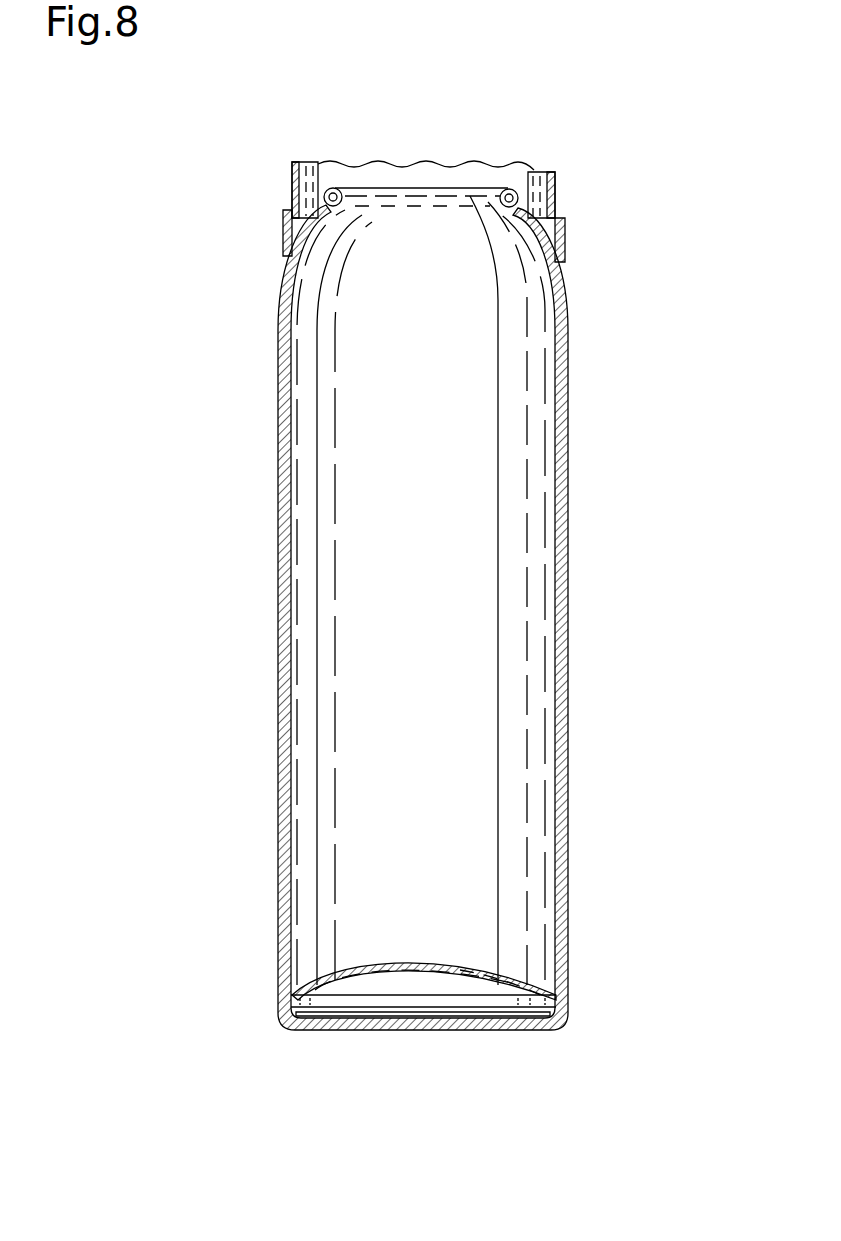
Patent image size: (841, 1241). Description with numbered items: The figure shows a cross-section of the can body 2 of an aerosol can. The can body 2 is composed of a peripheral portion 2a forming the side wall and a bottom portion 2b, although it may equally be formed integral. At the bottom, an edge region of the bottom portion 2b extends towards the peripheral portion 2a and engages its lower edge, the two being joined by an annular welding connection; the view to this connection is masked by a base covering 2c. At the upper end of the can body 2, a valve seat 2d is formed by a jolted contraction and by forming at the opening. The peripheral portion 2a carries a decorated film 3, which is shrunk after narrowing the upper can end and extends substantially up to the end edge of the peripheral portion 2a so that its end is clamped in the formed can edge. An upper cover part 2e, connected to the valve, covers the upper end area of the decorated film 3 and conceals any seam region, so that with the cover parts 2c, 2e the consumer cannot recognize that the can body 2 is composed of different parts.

The can body 2 is at (236, 280).
The peripheral portion 2a is at (277, 659).
The bottom portion 2b is at (393, 958).
The base covering 2c is at (457, 1028).
The valve seat 2d is at (378, 192).
The upper cover part 2e is at (556, 198).
The decorated film 3 is at (277, 456).